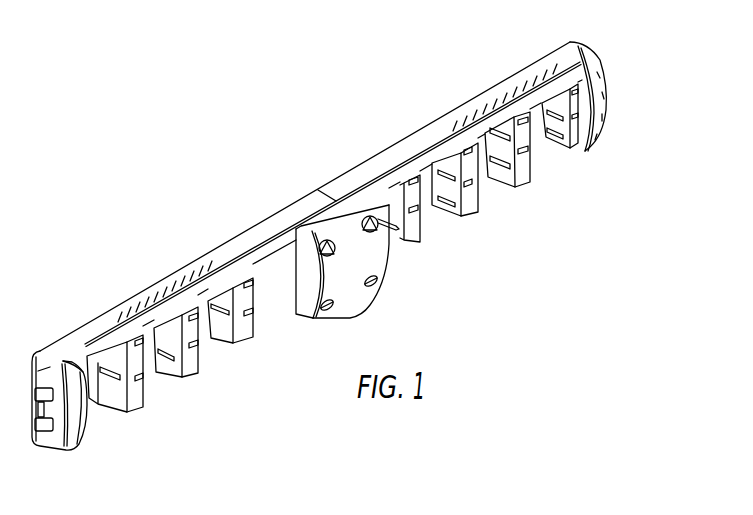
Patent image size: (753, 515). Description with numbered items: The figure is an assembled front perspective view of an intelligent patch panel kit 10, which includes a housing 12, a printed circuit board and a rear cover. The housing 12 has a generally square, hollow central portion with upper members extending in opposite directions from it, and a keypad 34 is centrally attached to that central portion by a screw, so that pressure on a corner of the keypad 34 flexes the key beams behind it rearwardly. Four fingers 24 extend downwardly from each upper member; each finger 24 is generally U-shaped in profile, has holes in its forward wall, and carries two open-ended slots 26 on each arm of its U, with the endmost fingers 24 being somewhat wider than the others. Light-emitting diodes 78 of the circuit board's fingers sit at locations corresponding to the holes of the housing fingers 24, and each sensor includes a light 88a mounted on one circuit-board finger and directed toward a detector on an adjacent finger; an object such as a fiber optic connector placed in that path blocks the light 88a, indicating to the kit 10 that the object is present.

The intelligent patch panel kit 10 is at (672, 63).
The housing 12 is at (572, 52).
The fingers 24 is at (412, 242).
The open-ended slots 26 is at (153, 348).
The keypad 34 is at (343, 285).
The light-emitting diodes (LEDs) 78 is at (193, 349).
The light 88a is at (168, 357).